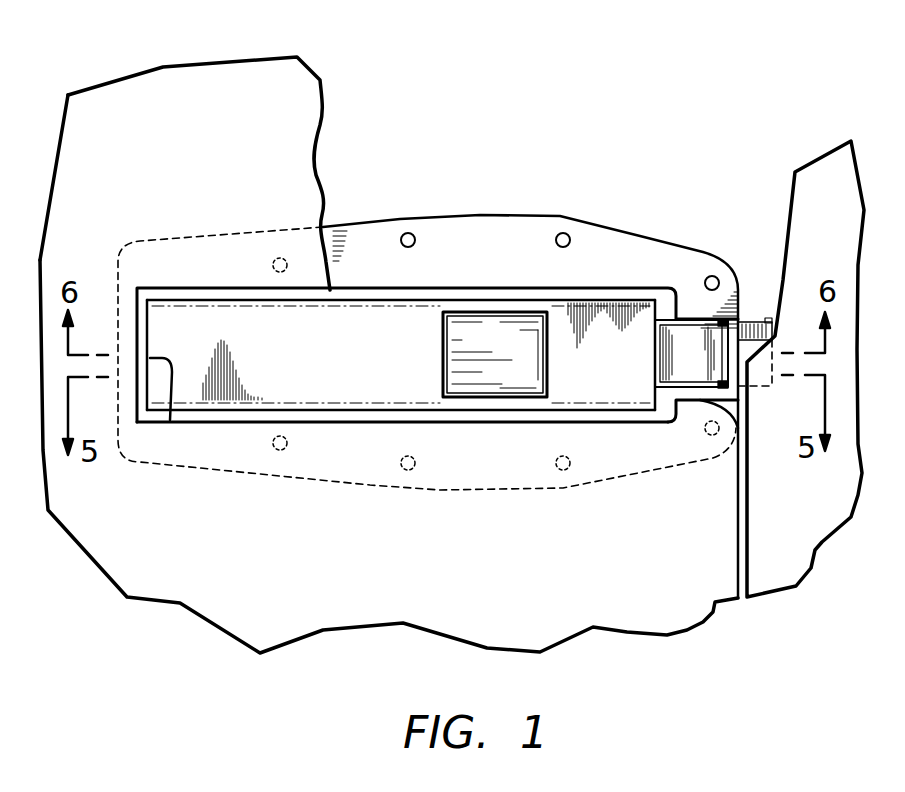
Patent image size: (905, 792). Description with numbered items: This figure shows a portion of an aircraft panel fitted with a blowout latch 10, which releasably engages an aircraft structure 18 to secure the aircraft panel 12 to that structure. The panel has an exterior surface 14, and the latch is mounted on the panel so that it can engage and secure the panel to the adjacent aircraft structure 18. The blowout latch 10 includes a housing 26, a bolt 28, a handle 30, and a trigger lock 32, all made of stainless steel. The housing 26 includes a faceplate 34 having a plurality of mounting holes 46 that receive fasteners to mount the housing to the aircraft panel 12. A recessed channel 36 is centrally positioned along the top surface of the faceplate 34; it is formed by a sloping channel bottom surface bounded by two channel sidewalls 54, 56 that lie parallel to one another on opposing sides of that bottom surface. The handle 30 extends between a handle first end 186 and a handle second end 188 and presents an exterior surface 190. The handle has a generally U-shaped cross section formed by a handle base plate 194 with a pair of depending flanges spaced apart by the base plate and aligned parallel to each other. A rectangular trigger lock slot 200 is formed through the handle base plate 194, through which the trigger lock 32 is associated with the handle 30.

The blowout latch 10 is at (503, 130).
The aircraft panel 12 is at (192, 66).
The exterior surface 14 is at (68, 165).
The aircraft structure 18 is at (819, 166).
The housing 26 is at (618, 235).
The bolt 28 is at (683, 335).
The handle 30 is at (388, 318).
The trigger lock 32 is at (500, 320).
The faceplate 34 is at (373, 468).
The recessed channel 36 is at (222, 422).
The mounting holes 46 is at (281, 250).
The channel sidewall 54 is at (465, 295).
The channel sidewall 56 is at (505, 415).
The handle first end 186 is at (170, 420).
The handle second end 188 is at (662, 320).
The exterior surface 190 is at (196, 335).
The handle base plate 194 is at (243, 372).
The trigger lock slot 200 is at (528, 398).